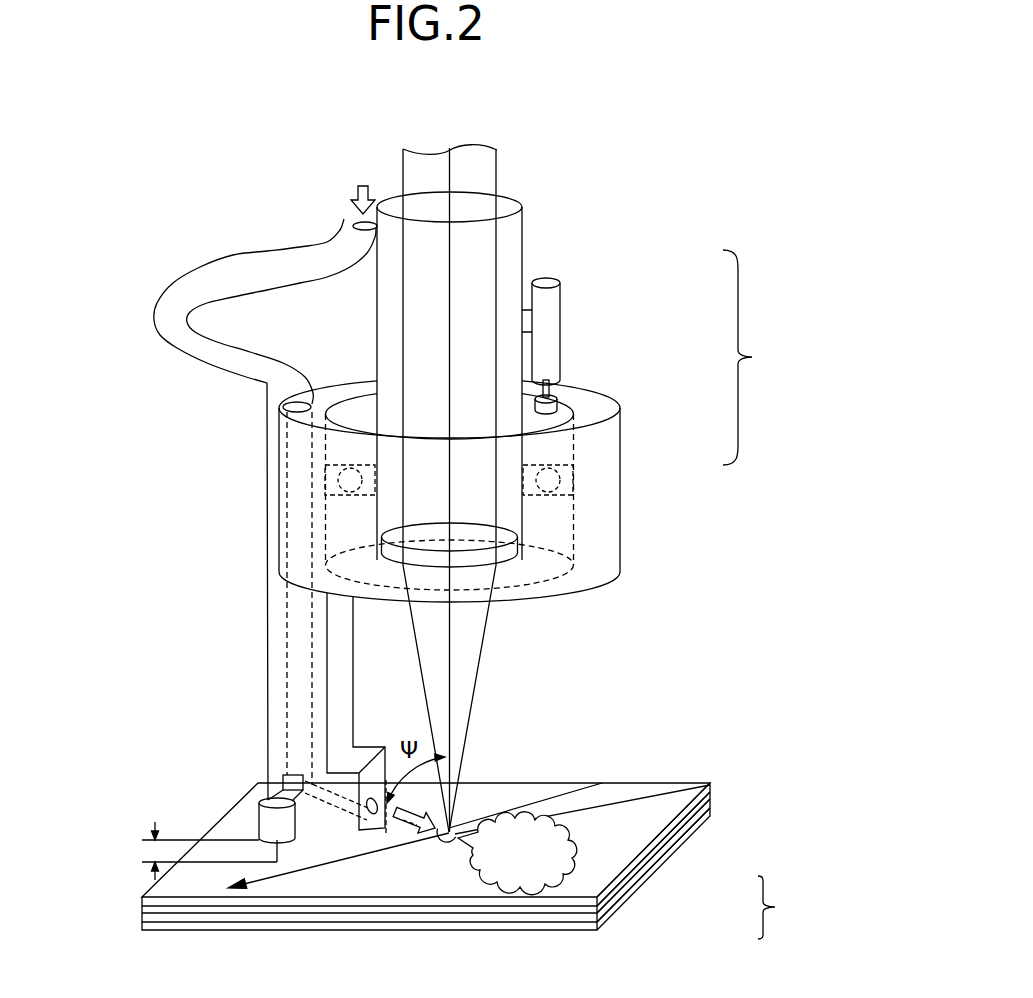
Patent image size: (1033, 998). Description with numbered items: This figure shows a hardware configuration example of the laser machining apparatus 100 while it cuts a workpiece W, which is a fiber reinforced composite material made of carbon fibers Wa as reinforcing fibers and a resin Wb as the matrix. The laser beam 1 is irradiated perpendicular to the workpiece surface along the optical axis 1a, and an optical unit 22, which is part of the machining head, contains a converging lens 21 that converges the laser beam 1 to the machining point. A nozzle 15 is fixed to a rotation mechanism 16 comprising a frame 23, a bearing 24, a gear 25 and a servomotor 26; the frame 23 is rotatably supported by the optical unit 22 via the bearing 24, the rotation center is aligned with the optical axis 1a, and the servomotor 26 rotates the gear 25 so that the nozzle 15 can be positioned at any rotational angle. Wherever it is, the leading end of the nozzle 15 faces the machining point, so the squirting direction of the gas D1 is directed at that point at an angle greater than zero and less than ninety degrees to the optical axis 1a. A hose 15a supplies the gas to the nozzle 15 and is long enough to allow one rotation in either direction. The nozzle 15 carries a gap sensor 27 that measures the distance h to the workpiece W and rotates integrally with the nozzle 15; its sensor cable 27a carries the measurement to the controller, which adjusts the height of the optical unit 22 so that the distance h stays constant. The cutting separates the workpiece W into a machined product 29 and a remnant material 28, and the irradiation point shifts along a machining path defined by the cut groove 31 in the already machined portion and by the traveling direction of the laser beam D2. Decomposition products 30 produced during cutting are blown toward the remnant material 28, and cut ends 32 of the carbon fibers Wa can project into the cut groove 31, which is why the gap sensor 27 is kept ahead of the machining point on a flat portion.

The laser machining apparatus 100 is at (692, 135).
The laser beam 1 is at (473, 692).
The optical axis 1a is at (450, 655).
The nozzle 15 is at (344, 789).
The hose 15a is at (247, 256).
The rotation mechanism 16 is at (756, 357).
The converging lens 21 is at (518, 553).
The optical unit 22 is at (522, 243).
The frame 23 is at (620, 474).
The bearing 24 is at (565, 462).
The gear 25 is at (565, 405).
The servomotor 26 is at (563, 321).
The gap sensor 27 is at (258, 822).
The sensor cable 27a is at (300, 245).
The remnant material 28 is at (678, 798).
The machined product 29 is at (477, 793).
The decomposition products 30 is at (485, 885).
The cut groove 31 is at (628, 788).
The cut ends 32 is at (537, 797).
The workpiece W is at (473, 861).
The carbon fibers Wa is at (657, 856).
The resin Wb is at (643, 881).
The squirting direction of the gas D1 is at (405, 823).
The traveling direction of the laser beam D2 is at (293, 872).
The distance h is at (155, 850).